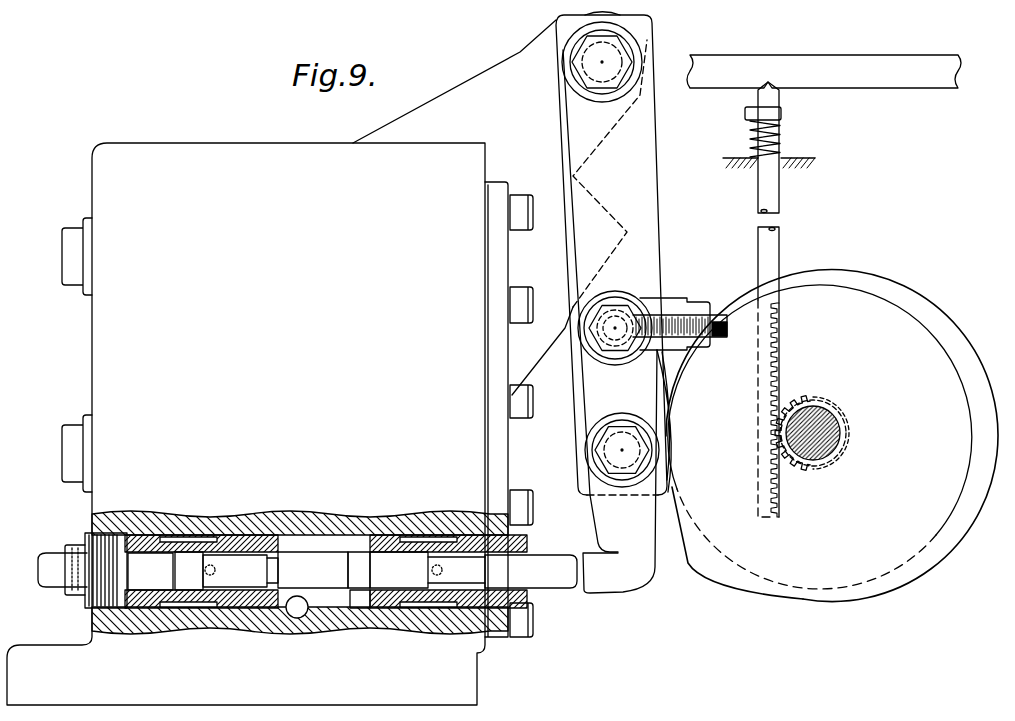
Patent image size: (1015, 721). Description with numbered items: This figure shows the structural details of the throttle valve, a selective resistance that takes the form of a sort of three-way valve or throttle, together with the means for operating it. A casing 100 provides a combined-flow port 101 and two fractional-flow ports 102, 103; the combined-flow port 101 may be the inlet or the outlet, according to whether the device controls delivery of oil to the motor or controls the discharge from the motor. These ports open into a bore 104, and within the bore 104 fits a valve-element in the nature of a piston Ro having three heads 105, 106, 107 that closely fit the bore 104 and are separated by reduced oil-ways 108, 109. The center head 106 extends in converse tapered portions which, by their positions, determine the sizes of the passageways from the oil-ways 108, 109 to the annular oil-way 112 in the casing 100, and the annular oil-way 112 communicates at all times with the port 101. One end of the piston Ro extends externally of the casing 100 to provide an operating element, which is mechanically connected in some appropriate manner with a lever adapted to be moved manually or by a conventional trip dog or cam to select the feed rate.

The casing 100 is at (270, 424).
The combined-flow port 101 is at (300, 617).
The fractional-flow port 102 is at (190, 605).
The fractional-flow port 103 is at (418, 605).
The bore 104 is at (150, 571).
The head 105 is at (187, 560).
The center head 106 is at (358, 560).
The head 107 is at (502, 560).
The reduced oil-way 108 is at (262, 556).
The reduced oil-way 109 is at (483, 553).
The annular oil-way 112 is at (362, 603).
The piston Ro is at (310, 553).